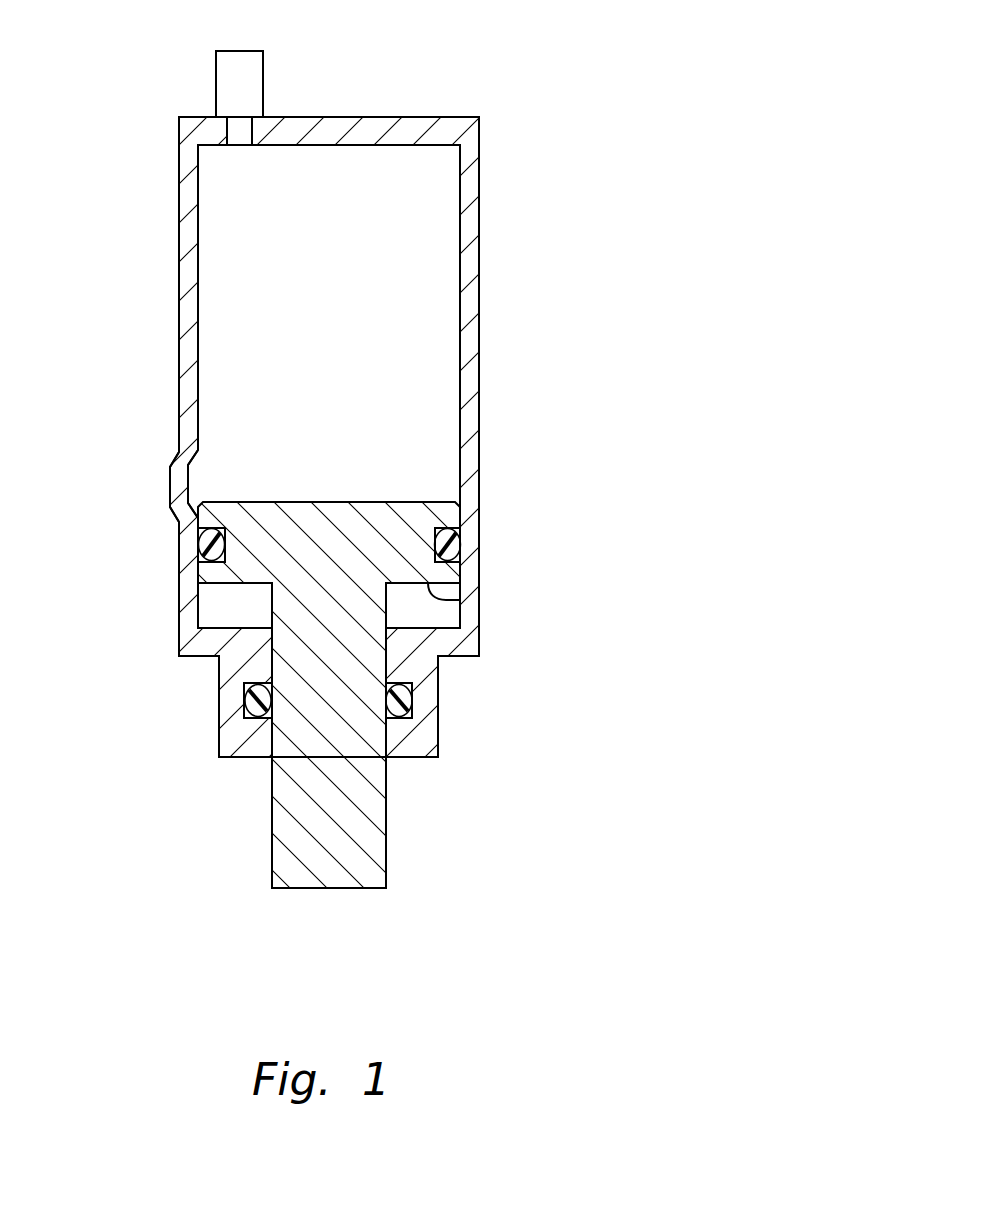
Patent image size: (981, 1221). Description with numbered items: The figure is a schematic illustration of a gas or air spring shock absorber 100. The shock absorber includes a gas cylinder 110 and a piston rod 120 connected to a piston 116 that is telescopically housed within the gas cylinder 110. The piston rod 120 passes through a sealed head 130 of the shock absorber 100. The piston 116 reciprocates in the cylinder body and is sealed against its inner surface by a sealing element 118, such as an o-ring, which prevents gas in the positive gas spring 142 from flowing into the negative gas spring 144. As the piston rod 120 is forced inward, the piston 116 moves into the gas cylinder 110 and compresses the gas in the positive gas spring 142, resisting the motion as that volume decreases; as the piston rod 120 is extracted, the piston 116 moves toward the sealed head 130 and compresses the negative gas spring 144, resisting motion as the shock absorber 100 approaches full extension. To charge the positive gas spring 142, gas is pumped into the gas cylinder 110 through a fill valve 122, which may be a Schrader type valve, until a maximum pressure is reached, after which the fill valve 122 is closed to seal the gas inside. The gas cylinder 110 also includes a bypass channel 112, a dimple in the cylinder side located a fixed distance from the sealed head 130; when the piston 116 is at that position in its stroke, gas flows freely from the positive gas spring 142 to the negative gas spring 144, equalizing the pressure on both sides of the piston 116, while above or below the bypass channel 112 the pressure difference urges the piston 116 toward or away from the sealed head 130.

The gas spring shock absorber 100 is at (564, 27).
The gas cylinder 110 is at (482, 455).
The bypass channel 112 is at (195, 485).
The piston 116 is at (453, 594).
The sealing element 118 is at (197, 547).
The piston rod 120 is at (387, 827).
The fill valve 122 is at (215, 72).
The sealed head 130 is at (438, 715).
The positive gas spring 142 is at (218, 251).
The negative gas spring 144 is at (218, 610).